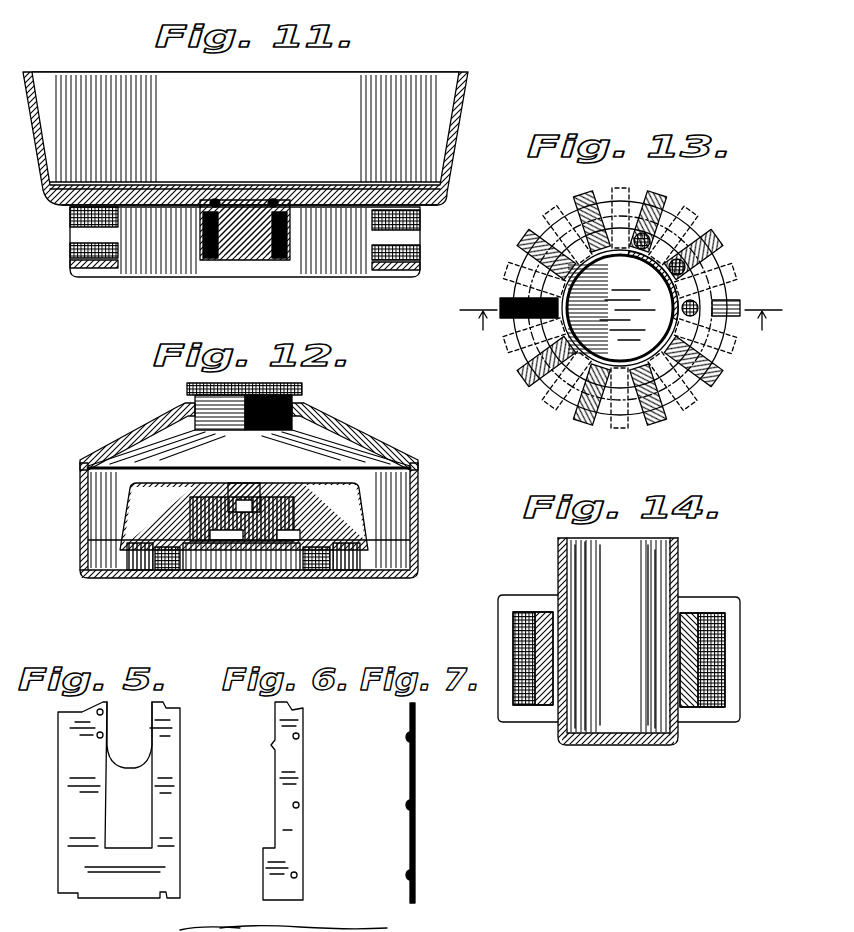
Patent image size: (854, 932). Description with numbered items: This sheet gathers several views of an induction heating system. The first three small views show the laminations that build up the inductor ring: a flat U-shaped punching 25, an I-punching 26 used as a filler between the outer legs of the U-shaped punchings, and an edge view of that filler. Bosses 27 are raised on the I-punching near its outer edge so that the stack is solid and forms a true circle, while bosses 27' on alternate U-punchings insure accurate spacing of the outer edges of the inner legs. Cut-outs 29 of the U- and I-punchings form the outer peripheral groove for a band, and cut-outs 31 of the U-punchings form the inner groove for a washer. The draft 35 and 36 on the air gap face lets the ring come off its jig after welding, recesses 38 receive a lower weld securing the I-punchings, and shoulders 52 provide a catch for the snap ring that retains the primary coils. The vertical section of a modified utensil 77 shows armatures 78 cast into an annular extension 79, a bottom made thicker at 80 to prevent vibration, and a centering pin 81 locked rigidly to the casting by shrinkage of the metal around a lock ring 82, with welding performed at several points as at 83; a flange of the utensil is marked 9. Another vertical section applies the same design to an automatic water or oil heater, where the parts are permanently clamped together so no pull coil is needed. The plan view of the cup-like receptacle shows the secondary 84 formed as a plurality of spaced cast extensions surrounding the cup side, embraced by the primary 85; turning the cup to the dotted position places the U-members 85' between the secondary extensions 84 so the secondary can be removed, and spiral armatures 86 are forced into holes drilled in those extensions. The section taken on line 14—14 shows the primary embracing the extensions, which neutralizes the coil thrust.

In FIG. 11, the utensil 77 is at (397, 88).
In FIG. 11, the flange 9 is at (438, 198).
In FIG. 11, the armatures 78 is at (417, 240).
In FIG. 11, the annular extension 79 is at (332, 263).
In FIG. 11, the thicker bottom 80 is at (205, 205).
In FIG. 11, the centering pin 81 is at (290, 243).
In FIG. 11, the lock ring 82 is at (230, 200).
In FIG. 11, the welding points 83 is at (280, 200).
In FIG. 13, the secondary extensions 84 is at (703, 263).
In FIG. 14, the secondary extensions 84 is at (698, 613).
In FIG. 13, the primary 85 is at (632, 308).
In FIG. 14, the primary 85 is at (533, 632).
In FIG. 13, the U-members 85' is at (622, 308).
In FIG. 14, the U-members 85' is at (509, 648).
In FIG. 13, the spiral armatures 86 is at (657, 227).
In FIG. 14, the spiral armatures 86 is at (693, 652).
In FIG. 13, the section line 14— 14 is at (621, 310).
In FIG. 5, the U-shaped punchings 25 is at (170, 818).
In FIG. 6, the I-punchings 26 is at (292, 827).
In FIG. 7, the I-punchings 26 is at (415, 832).
In FIG. 6, the bosses 27 is at (316, 801).
In FIG. 7, the bosses 27 is at (392, 806).
In FIG. 5, the bosses 27' is at (64, 740).
In FIG. 5, the cut-outs 29 is at (180, 708).
In FIG. 6, the cut-outs 29 is at (295, 707).
In FIG. 5, the cut-outs 31 is at (58, 712).
In FIG. 5, the draft 35 is at (110, 720).
In FIG. 5, the draft 36 is at (145, 707).
In FIG. 5, the recesses 38 is at (163, 897).
In FIG. 6, the recesses 38 is at (285, 903).
In FIG. 5, the shoulders 52 is at (126, 771).
In FIG. 6, the shoulders 52 is at (270, 753).